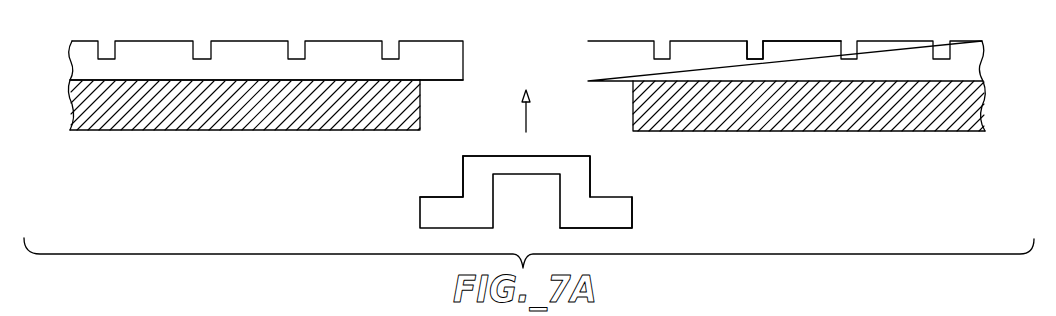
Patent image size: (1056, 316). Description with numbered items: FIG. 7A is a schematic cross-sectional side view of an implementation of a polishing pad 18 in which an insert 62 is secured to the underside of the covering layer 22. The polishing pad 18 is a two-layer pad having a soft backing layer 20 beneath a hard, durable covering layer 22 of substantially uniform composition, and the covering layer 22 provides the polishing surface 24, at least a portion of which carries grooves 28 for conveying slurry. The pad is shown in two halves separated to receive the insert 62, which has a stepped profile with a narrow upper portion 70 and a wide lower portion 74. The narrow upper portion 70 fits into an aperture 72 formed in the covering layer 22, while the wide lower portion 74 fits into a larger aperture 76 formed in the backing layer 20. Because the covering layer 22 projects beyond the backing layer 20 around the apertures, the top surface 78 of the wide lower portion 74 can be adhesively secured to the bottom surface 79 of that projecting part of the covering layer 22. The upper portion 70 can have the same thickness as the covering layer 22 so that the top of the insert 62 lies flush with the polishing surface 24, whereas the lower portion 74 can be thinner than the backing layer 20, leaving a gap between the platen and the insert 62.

The polishing pad 18 is at (291, 110).
The backing layer 20 is at (980, 110).
The covering layer 22 is at (977, 63).
The polishing surface 24 is at (823, 41).
The grooves 28 is at (753, 50).
The insert 62 is at (548, 198).
The narrow upper portion 70 is at (590, 187).
The aperture 72 is at (463, 62).
The wide lower portion 74 is at (632, 213).
The aperture 76 is at (420, 107).
The top surface 78 is at (447, 195).
The bottom surface 79 is at (440, 81).